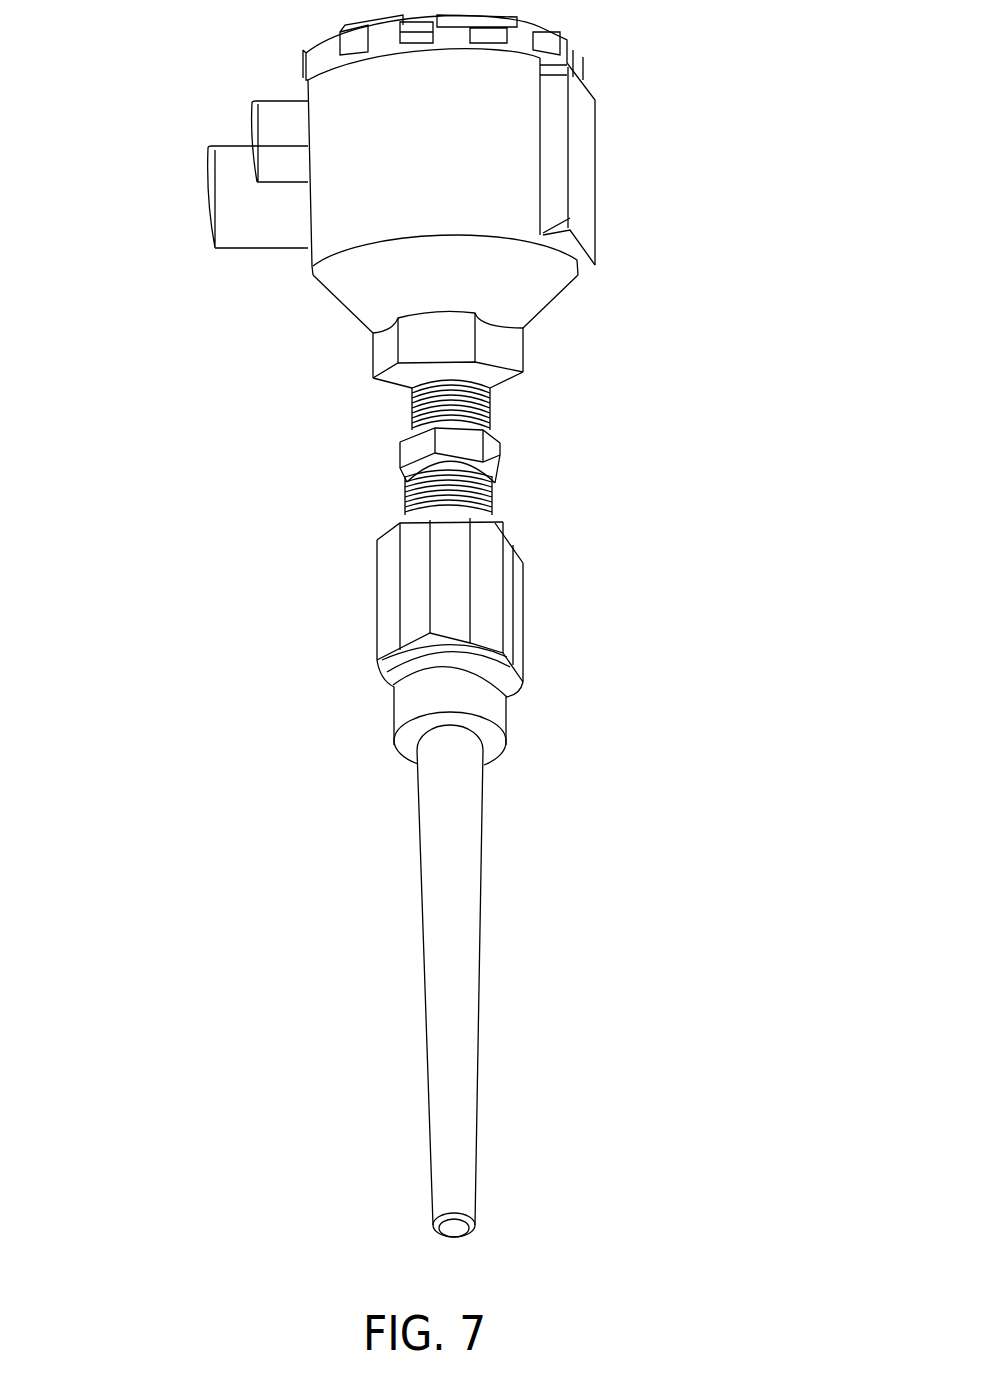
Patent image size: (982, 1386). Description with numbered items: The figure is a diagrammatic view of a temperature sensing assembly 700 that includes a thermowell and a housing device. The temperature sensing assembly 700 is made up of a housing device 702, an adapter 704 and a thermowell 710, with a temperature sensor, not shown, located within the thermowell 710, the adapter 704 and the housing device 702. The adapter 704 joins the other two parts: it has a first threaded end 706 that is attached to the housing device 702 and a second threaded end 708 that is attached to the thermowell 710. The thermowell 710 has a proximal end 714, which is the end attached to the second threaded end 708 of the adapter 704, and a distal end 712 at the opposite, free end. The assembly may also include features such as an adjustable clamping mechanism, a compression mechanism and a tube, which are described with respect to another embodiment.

The temperature sensing assembly 700 is at (785, 93).
The housing device 702 is at (205, 193).
The adapter 704 is at (538, 452).
The first threaded end 706 is at (408, 400).
The second threaded end 708 is at (408, 495).
The thermowell 710 is at (444, 1001).
The distal end 712 is at (467, 1237).
The proximal end 714 is at (483, 592).